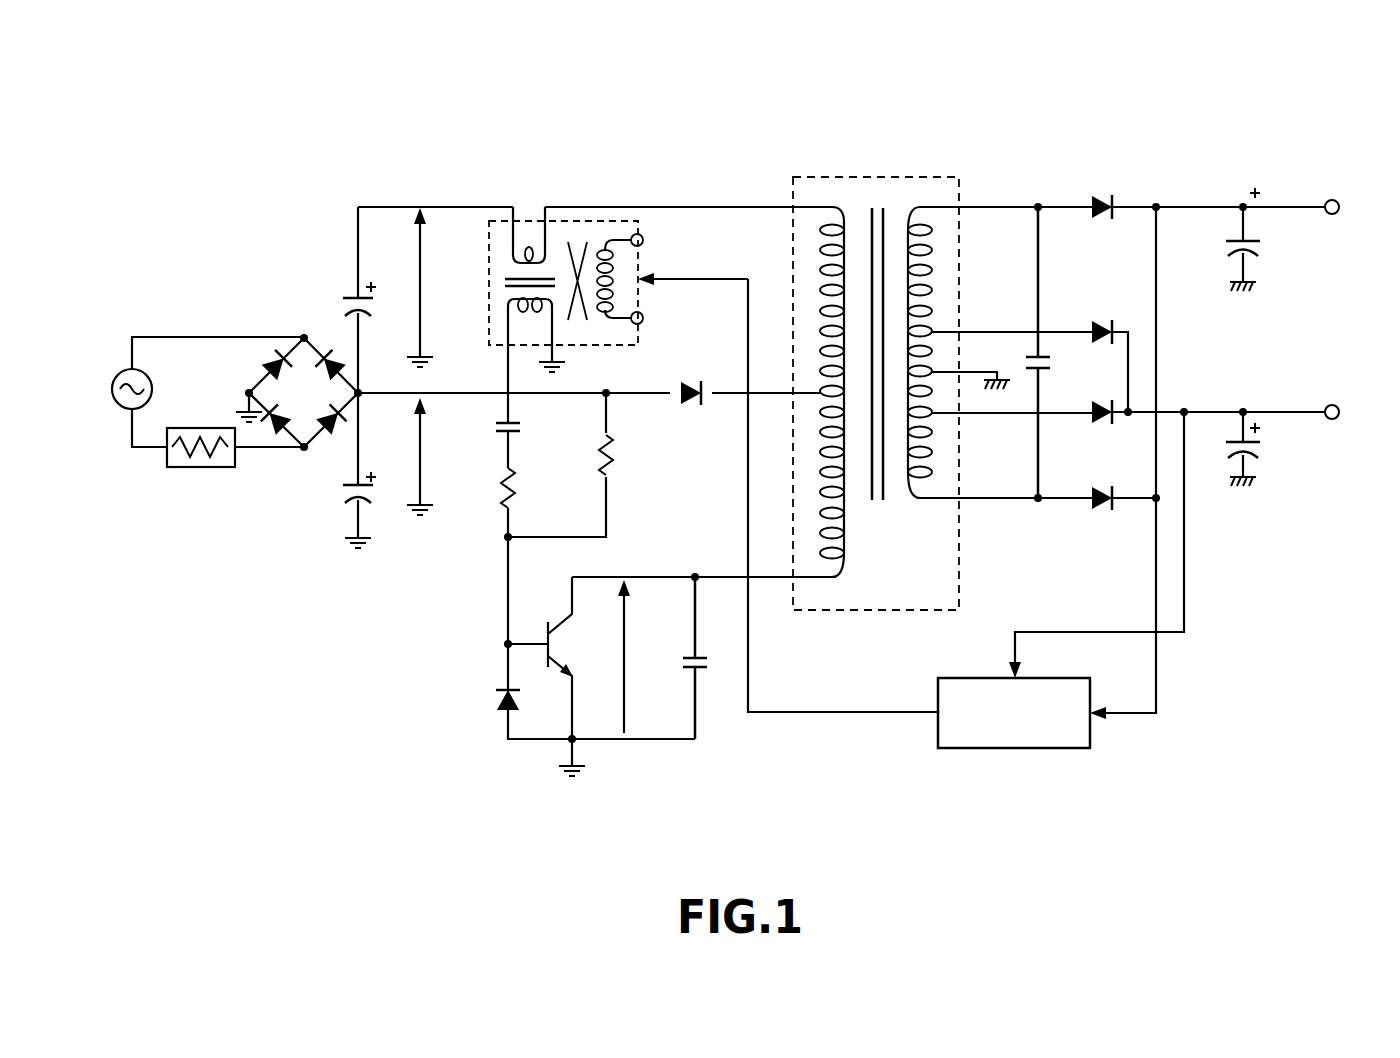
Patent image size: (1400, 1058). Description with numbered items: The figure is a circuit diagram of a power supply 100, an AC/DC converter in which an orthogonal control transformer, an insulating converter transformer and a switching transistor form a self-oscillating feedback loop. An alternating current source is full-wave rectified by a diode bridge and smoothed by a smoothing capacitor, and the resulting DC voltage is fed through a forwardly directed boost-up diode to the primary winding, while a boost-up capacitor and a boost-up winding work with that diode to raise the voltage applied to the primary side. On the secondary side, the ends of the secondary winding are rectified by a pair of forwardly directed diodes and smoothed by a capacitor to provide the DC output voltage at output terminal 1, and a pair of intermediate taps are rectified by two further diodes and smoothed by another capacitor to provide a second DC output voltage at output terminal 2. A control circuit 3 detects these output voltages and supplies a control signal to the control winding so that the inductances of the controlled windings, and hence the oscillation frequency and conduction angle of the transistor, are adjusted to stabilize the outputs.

The power supply 100 is at (1222, 166).
The output terminal 1 is at (1332, 199).
The output terminal 2 is at (1332, 404).
The control circuit 3 is at (1026, 749).